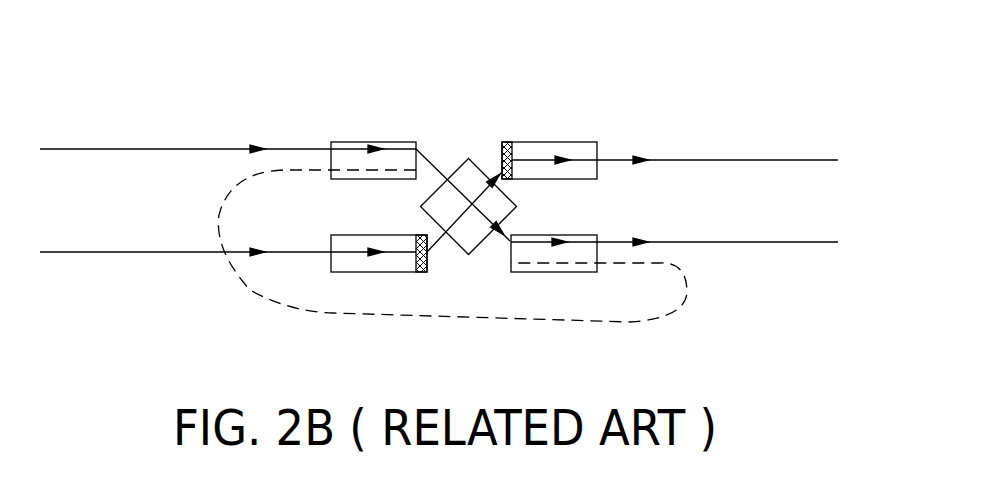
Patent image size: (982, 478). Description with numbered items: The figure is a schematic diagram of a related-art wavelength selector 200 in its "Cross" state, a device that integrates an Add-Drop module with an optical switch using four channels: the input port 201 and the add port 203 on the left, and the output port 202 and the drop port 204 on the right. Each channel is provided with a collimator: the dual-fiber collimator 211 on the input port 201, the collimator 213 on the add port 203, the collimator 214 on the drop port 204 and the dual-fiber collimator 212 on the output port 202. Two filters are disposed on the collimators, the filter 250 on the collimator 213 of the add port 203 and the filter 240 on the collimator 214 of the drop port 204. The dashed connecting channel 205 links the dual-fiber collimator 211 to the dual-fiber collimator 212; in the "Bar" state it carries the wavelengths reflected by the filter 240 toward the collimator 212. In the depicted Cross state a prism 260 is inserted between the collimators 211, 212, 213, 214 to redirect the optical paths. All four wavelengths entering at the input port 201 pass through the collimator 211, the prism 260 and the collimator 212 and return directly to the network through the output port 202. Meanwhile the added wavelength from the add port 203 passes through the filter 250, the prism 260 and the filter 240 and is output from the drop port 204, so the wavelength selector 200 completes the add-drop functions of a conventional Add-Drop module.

The wavelength selector 200 is at (93, 60).
The input port 201 is at (108, 151).
The output port 202 is at (764, 243).
The add port 203 is at (108, 254).
The drop port 204 is at (764, 159).
The connecting channel 205 is at (338, 312).
The dual-fiber collimator 211 is at (383, 141).
The dual-fiber collimator 212 is at (553, 234).
The collimator 213 is at (383, 234).
The collimator 214 is at (550, 141).
The filter 240 is at (507, 141).
The filter 250 is at (422, 273).
The prism 260 is at (461, 159).